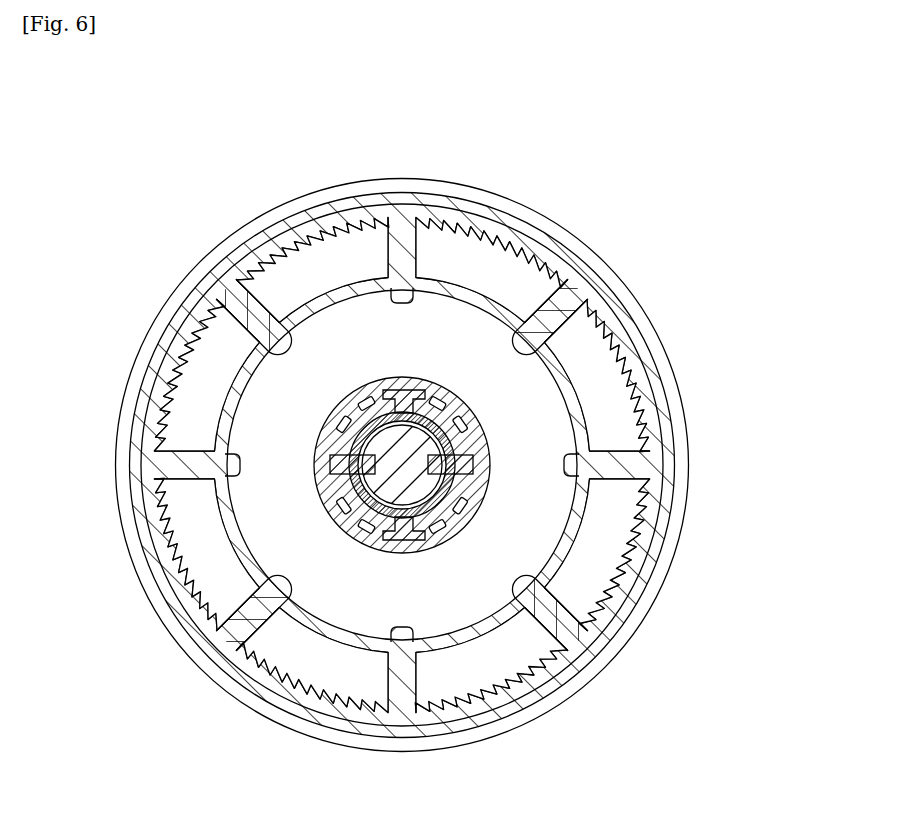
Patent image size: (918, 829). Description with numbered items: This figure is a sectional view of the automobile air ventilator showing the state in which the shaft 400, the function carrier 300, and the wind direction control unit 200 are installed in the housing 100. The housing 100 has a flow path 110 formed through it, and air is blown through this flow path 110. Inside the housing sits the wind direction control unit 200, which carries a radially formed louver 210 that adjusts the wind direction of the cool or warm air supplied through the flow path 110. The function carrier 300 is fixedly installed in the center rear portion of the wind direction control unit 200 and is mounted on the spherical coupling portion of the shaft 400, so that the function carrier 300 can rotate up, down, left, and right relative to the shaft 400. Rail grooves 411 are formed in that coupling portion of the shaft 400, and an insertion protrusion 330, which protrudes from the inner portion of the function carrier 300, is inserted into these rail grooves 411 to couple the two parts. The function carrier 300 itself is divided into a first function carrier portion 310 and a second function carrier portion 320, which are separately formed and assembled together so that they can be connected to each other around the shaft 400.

The housing 100 is at (680, 398).
The flow path 110 is at (600, 367).
The wind direction control unit 200 is at (177, 470).
The louver 210 is at (178, 470).
The function carrier 300 is at (420, 106).
The first function carrier portion 310 is at (375, 500).
The second function carrier portion 320 is at (437, 432).
The insertion protrusion 330 is at (395, 492).
The shaft 400 is at (397, 485).
The rail grooves 411 is at (512, 352).